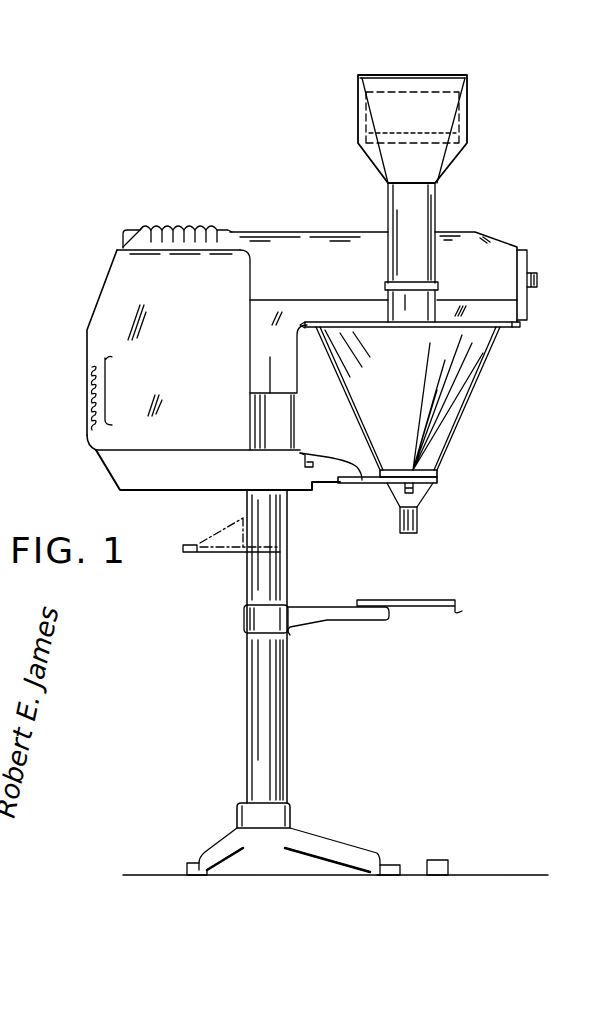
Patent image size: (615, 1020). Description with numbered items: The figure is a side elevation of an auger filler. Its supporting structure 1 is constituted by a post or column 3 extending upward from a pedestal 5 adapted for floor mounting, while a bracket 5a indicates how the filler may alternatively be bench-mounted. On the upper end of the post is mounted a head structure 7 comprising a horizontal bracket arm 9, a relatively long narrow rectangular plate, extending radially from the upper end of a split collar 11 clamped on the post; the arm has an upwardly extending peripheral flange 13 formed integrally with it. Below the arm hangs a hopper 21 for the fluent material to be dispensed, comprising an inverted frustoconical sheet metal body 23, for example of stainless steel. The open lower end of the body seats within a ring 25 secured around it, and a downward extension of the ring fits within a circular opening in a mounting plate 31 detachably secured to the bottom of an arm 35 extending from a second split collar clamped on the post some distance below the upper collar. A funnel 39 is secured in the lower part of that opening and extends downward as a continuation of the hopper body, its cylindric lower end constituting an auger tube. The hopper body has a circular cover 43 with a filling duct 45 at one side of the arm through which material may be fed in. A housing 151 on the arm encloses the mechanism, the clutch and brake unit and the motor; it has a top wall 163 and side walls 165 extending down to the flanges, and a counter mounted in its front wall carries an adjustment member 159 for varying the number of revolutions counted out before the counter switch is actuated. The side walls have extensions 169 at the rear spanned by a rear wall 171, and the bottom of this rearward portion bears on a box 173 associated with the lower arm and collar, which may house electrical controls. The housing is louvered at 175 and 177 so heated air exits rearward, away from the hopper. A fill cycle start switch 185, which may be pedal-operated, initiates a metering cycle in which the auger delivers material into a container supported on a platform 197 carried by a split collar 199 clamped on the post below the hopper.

The supporting structure 1 is at (240, 698).
The post or column 3 is at (288, 742).
The pedestal 5 is at (337, 838).
The bracket 5a is at (183, 553).
The head structure 7 is at (528, 227).
The horizontal bracket arm 9 is at (518, 327).
The split collar 11 is at (297, 390).
The upwardly extending peripheral flange 13 is at (338, 284).
The hopper 21 is at (410, 385).
The inverted frustoconical sheet metal body 23 is at (468, 416).
The ring 25 is at (437, 475).
The mounting plate 31 is at (368, 488).
The arm 35 is at (330, 456).
The funnel 39 is at (420, 495).
The circular cover 43 is at (468, 322).
The filling duct 45 is at (437, 283).
The housing 151 is at (318, 232).
The adjustment member 159 is at (537, 280).
The top wall 163 is at (375, 232).
The side walls 165 is at (445, 255).
The extensions 169 is at (190, 369).
The rear wall 171 is at (88, 328).
The box 173 is at (105, 465).
The louvers 175 is at (183, 230).
The louvers 177 is at (90, 413).
The fill cycle start switch 185 is at (440, 858).
The platform 197 is at (456, 606).
The split collar 199 is at (268, 620).